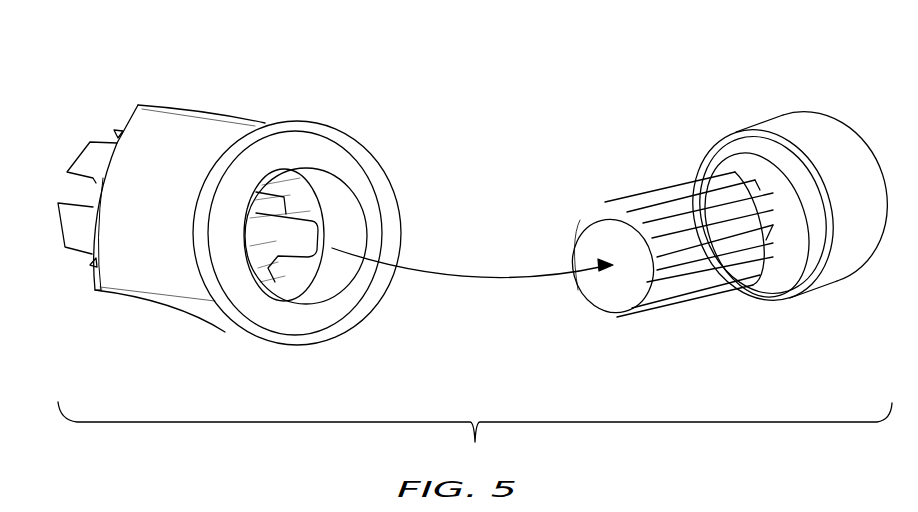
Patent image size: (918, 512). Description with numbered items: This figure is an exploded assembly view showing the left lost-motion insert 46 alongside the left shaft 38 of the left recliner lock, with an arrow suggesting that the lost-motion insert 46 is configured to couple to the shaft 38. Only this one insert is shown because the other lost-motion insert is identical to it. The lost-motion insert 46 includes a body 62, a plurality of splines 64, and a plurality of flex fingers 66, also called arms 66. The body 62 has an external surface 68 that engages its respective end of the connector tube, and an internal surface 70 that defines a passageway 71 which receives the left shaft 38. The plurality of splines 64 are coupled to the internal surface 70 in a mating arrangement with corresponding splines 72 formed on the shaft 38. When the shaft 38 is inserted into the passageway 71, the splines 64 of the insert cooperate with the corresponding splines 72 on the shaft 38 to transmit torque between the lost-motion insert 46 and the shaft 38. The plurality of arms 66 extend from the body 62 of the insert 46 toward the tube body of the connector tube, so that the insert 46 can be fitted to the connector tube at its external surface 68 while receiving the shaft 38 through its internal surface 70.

The left shaft 38 is at (652, 162).
The lost-motion insert 46 is at (240, 73).
The body 62 is at (178, 137).
The plurality of splines 64 is at (285, 265).
The flex fingers 66 is at (66, 143).
The external surface 68 is at (148, 285).
The internal surface 70 is at (332, 275).
The passageway 71 is at (337, 197).
The corresponding splines 72 is at (613, 197).